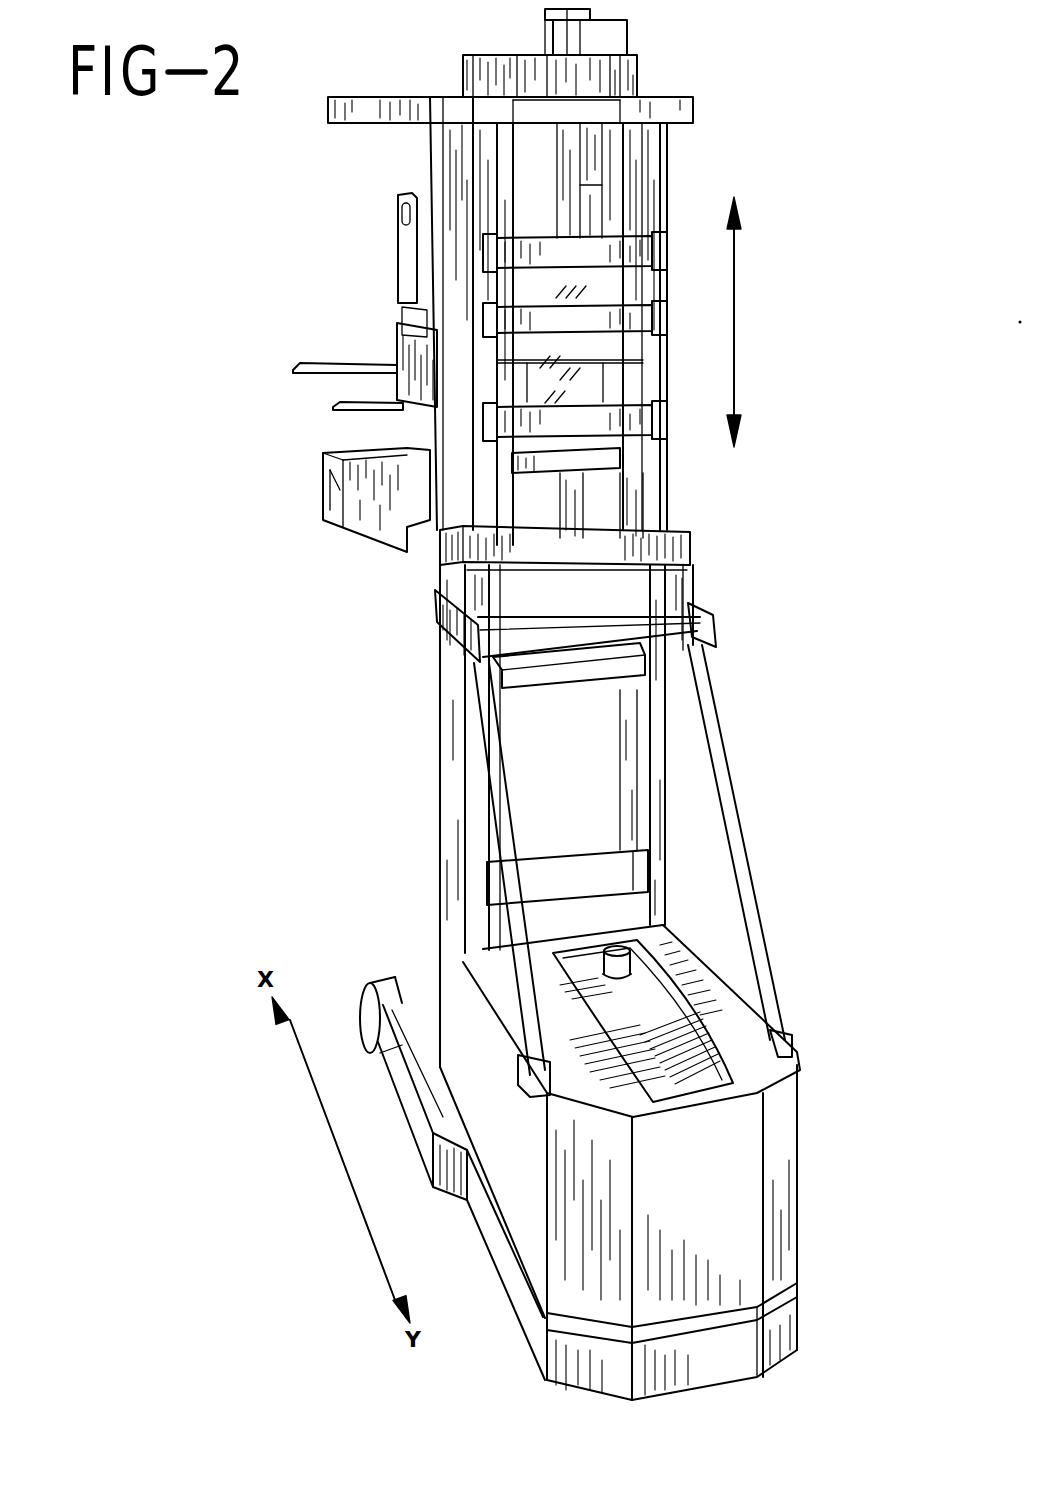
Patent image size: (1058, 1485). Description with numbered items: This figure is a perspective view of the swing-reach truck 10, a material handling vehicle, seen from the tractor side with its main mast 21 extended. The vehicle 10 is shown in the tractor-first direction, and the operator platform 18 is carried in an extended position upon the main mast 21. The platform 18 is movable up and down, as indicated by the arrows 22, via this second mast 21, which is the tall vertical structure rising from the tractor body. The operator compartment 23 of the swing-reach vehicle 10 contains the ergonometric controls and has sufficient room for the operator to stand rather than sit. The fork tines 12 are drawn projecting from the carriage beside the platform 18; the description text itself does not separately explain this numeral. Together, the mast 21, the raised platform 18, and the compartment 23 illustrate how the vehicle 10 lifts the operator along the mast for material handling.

The swing-reach truck 10 is at (810, 398).
The fork tines 12 is at (333, 408).
The operator platform 18 is at (340, 450).
The main mast 21 is at (435, 650).
The arrows 22 is at (735, 305).
The operator compartment 23 is at (352, 247).